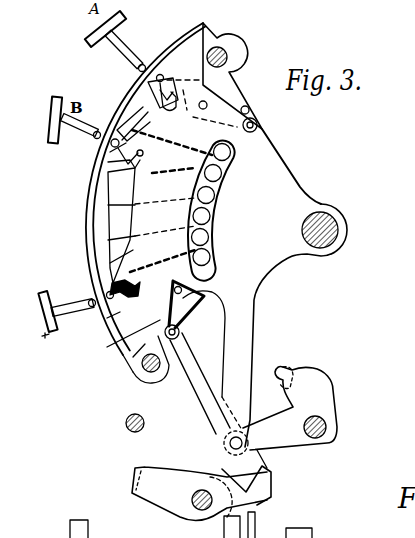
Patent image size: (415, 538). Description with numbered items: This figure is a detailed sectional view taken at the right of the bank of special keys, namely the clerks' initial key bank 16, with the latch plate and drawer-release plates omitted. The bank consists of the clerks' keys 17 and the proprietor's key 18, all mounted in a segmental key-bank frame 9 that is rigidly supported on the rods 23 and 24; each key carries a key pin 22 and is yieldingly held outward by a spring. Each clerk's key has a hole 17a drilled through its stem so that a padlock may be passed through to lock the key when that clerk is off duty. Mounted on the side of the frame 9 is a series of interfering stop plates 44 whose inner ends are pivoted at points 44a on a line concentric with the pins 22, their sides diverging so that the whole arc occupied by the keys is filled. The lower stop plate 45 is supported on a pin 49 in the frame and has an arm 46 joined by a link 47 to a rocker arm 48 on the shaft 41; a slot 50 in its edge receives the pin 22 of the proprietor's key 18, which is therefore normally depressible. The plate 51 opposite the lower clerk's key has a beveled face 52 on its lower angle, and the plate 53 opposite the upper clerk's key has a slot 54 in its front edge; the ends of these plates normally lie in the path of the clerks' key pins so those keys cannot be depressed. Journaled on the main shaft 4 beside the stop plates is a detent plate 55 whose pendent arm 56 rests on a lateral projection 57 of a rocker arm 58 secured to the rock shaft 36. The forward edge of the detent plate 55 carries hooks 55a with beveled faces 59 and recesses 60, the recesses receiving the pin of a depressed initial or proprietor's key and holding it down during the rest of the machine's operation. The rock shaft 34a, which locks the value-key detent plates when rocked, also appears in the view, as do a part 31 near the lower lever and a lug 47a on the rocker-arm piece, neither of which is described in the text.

The main shaft 4 is at (330, 231).
The key-bank frame 9 is at (205, 38).
The clerks' initial key bank 16 is at (129, 190).
The clerks' keys 17 is at (91, 34).
The hole 17a is at (144, 65).
The proprietor's key 18 is at (50, 340).
The key pins 22 is at (164, 77).
The rod 23 is at (224, 55).
The rod 24 is at (147, 377).
The lever 31 is at (134, 482).
The rod or shaft 34a is at (125, 424).
The shaft 36 is at (200, 507).
The shaft 41 is at (327, 428).
The interfering stop plates 44 is at (117, 183).
The pivot points 44a is at (230, 170).
The lower stop plate 45 is at (112, 342).
The arm 46 is at (133, 357).
The link 47 is at (200, 380).
The lug 47a is at (291, 367).
The rocker arm 48 is at (277, 447).
The pin 49 is at (188, 284).
The slot 50 is at (107, 318).
The plate 51 is at (112, 147).
The beveled face 52 is at (108, 165).
The plate 53 is at (143, 113).
The slot 54 is at (148, 98).
The detent plate 55 is at (280, 176).
The hooks 55a is at (170, 78).
The pendent arm 56 is at (242, 322).
The lateral projection 57 is at (275, 487).
The rocker arm 58 is at (227, 473).
The beveled faces 59 is at (138, 128).
The recesses 60 is at (143, 156).